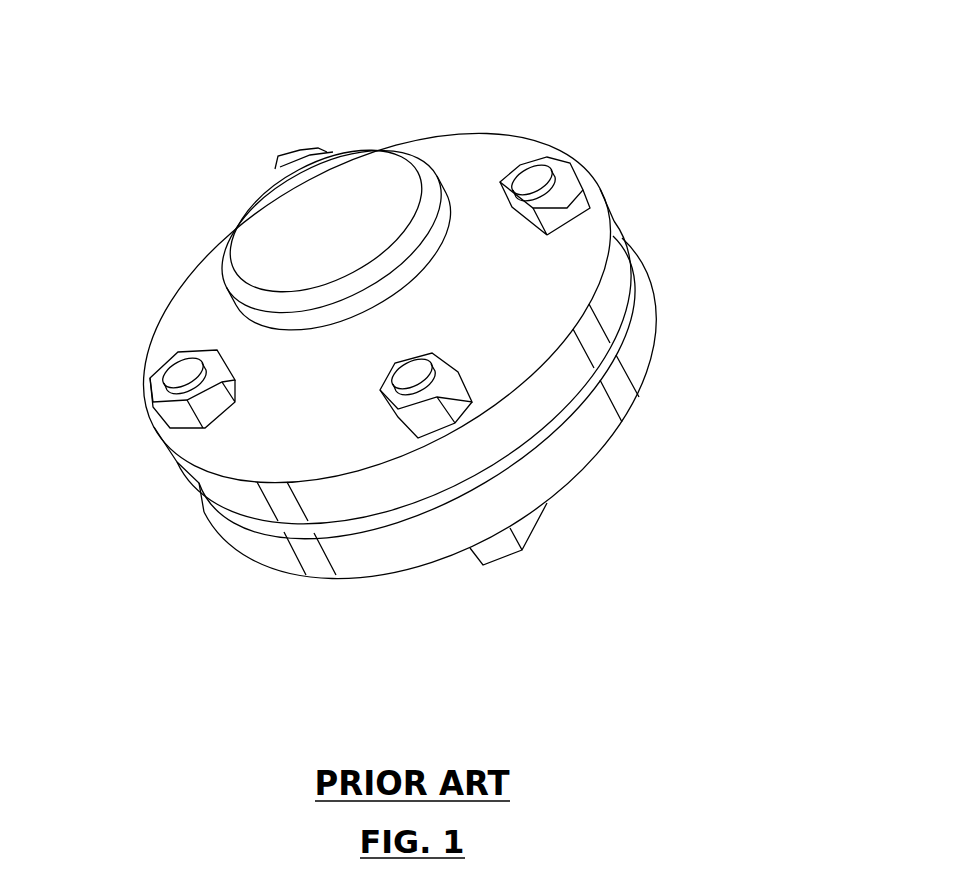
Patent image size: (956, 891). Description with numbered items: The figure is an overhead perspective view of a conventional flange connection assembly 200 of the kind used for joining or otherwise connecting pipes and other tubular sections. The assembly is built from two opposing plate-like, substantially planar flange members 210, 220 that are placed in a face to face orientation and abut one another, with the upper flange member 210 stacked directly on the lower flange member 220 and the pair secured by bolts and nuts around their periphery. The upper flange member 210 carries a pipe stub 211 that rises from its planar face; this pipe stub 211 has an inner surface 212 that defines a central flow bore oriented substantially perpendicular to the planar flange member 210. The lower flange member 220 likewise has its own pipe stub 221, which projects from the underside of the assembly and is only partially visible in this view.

The flange connection assembly 200 is at (506, 131).
The flange member 210 is at (182, 317).
The pipe stub 211 is at (447, 190).
The inner surface 212 is at (258, 235).
The flange member 220 is at (645, 354).
The pipe stub 221 is at (547, 503).